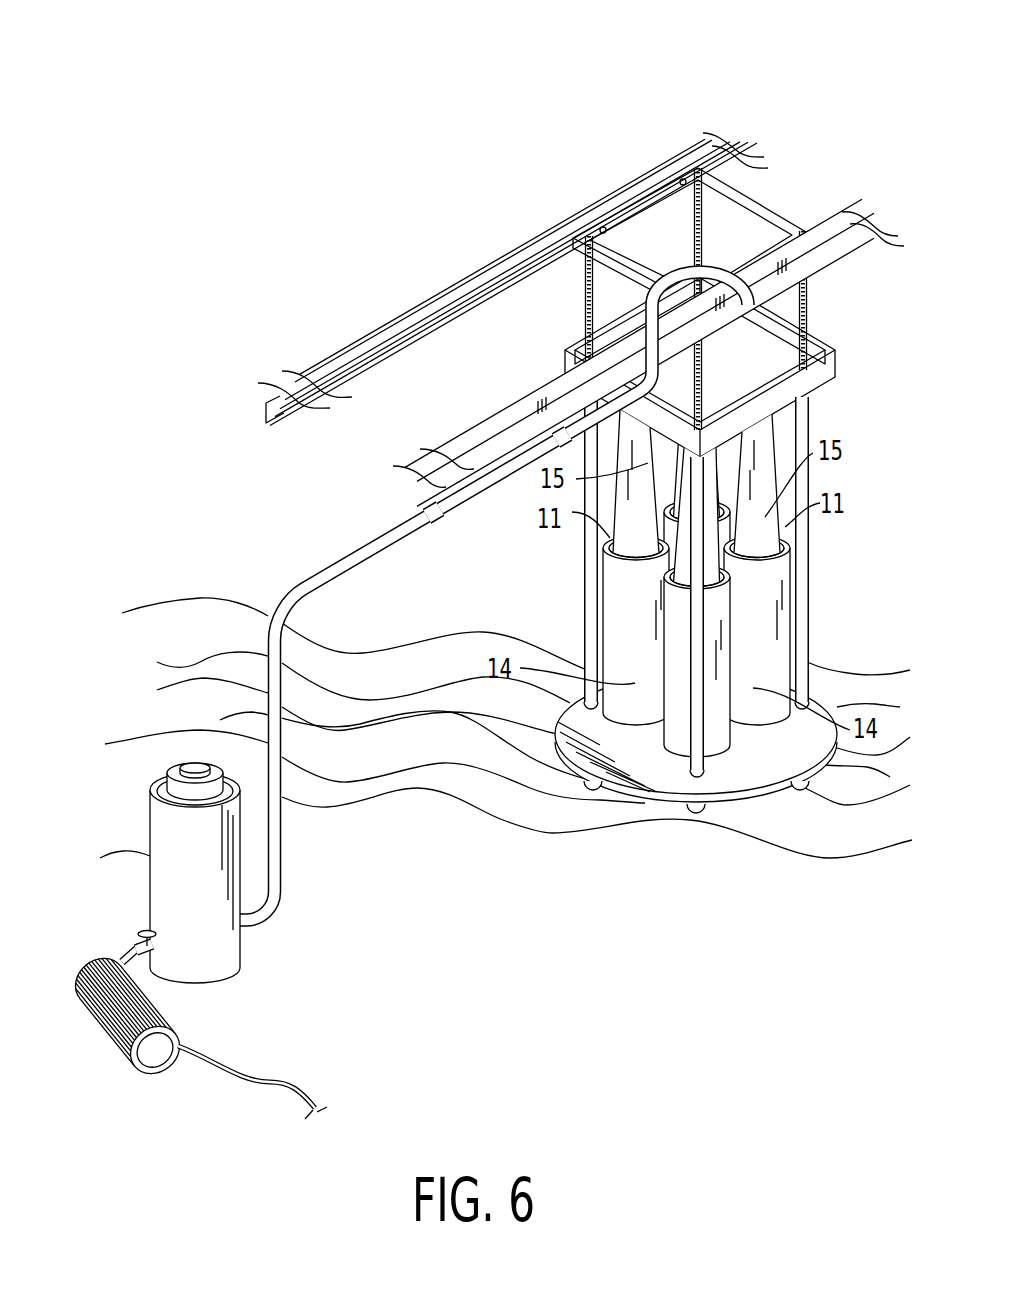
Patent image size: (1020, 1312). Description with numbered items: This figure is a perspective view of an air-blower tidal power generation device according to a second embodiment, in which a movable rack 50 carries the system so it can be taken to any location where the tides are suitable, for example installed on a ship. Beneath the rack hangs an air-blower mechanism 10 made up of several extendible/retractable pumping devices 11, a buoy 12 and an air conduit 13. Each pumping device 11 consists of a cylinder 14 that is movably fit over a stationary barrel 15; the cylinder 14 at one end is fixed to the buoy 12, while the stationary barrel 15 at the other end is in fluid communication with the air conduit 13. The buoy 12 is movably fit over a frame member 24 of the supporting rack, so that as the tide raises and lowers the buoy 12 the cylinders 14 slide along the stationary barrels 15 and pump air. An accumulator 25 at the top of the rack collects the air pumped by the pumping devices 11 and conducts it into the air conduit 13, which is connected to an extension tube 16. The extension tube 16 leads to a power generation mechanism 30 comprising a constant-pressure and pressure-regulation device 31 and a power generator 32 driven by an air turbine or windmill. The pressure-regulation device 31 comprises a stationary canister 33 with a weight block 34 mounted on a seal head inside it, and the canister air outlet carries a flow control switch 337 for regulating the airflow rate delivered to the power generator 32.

The air-blower mechanism 10 is at (733, 507).
The extendible/retractable pumping device 11 is at (696, 548).
The buoy 12 is at (740, 768).
The air conduit 13 is at (807, 297).
The cylinder 14 is at (696, 636).
The stationary barrel 15 is at (696, 481).
The extension tube 16 is at (337, 563).
The frame member 24 is at (800, 672).
The accumulator 25 is at (733, 367).
The power generation mechanism 30 is at (401, 703).
The constant-pressure and pressure-regulation device 31 is at (191, 902).
The power generator 32 is at (110, 1032).
The canister 33 is at (150, 856).
The weight block 34 is at (197, 767).
The flow control switch 337 is at (138, 935).
The movable rack 50 is at (650, 140).